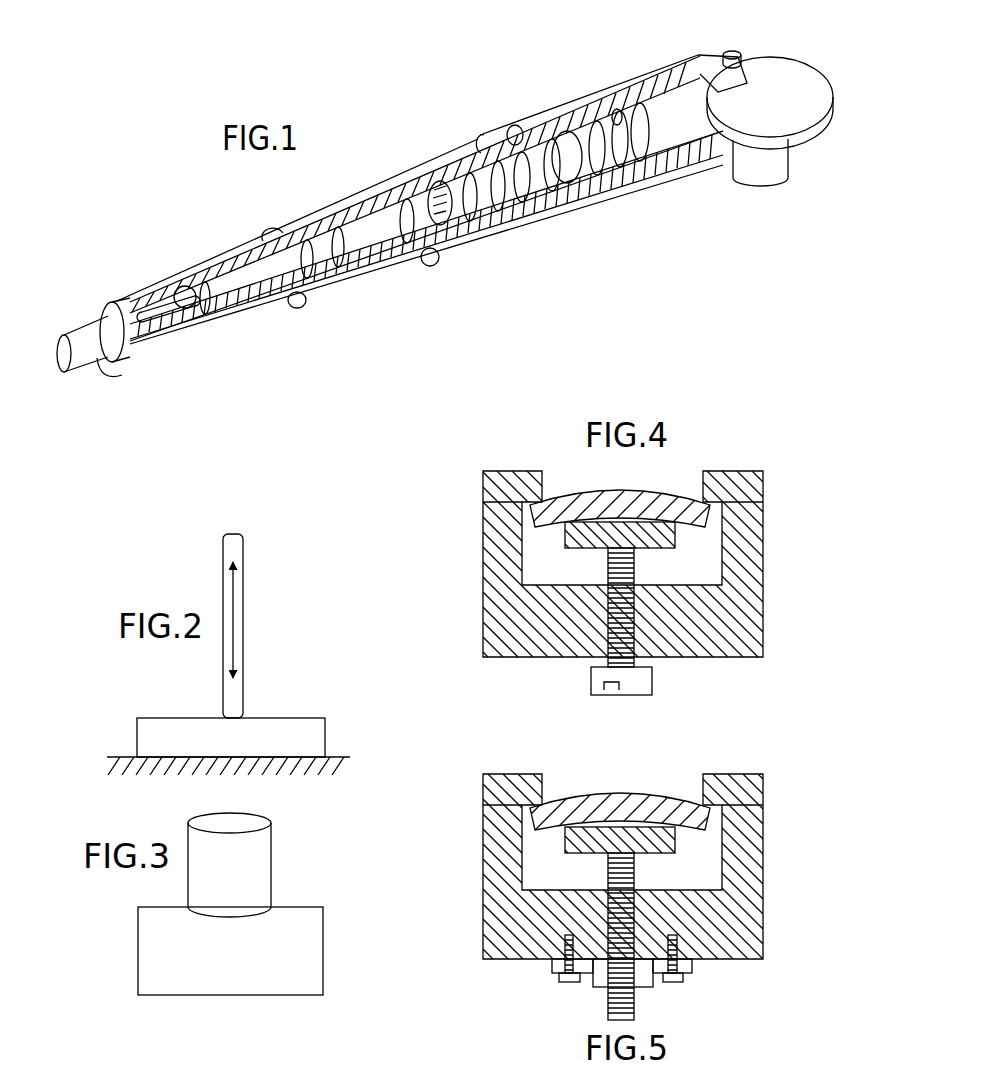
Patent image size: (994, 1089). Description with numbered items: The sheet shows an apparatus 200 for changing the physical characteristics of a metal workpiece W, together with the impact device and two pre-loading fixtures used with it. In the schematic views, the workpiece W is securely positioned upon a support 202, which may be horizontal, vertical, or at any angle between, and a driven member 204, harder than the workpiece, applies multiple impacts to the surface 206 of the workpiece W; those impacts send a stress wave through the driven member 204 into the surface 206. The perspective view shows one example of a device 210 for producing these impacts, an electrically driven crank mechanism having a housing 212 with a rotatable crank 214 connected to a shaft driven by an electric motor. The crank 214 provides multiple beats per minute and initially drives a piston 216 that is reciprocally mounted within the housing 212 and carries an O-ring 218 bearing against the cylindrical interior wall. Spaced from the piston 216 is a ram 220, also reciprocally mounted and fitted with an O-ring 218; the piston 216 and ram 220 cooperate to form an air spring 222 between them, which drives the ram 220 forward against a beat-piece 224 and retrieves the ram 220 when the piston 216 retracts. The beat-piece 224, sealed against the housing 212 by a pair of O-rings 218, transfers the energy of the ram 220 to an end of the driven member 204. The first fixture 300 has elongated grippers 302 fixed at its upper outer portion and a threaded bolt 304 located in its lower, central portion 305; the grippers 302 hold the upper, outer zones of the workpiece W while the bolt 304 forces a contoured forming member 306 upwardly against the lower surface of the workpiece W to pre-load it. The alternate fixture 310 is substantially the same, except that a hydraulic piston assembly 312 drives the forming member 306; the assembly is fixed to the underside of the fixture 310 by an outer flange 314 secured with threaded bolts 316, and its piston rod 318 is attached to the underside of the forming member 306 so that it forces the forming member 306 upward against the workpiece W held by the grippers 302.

In FIG. 2, the apparatus 200 is at (262, 682).
In FIG. 3, the apparatus 200 is at (282, 877).
In FIG. 2, the support 202 is at (104, 756).
In FIG. 1, the driven member 204 is at (66, 372).
In FIG. 2, the driven member 204 is at (244, 583).
In FIG. 3, the driven member 204 is at (272, 845).
In FIG. 2, the surface 206 is at (293, 718).
In FIG. 3, the surface 206 is at (305, 907).
In FIG. 1, the device 210 is at (518, 105).
In FIG. 1, the housing 212 is at (603, 77).
In FIG. 1, the rotatable crank 214 is at (803, 147).
In FIG. 1, the piston 216 is at (643, 173).
In FIG. 1, the O-ring 218 is at (350, 283).
In FIG. 1, the ram 220 is at (483, 243).
In FIG. 1, the air spring 222 is at (512, 128).
In FIG. 1, the beat-piece 224 is at (285, 278).
In FIG. 4, the fixture 300 is at (772, 553).
In FIG. 4, the elongated grippers 302 is at (542, 490).
In FIG. 5, the elongated grippers 302 is at (542, 790).
In FIG. 4, the threaded bolt 304 is at (653, 682).
In FIG. 4, the lower, central portion 305 is at (553, 657).
In FIG. 4, the forming member 306 is at (659, 549).
In FIG. 5, the forming member 306 is at (660, 854).
In FIG. 5, the alternate fixture 310 is at (773, 865).
In FIG. 5, the hydraulic piston assembly 312 is at (650, 988).
In FIG. 5, the outer flange 314 is at (553, 972).
In FIG. 5, the threaded bolts 316 is at (565, 983).
In FIG. 5, the piston rod 318 is at (608, 870).
In FIG. 2, the workpiece W is at (333, 736).
In FIG. 3, the workpiece W is at (333, 949).
In FIG. 4, the workpiece W is at (677, 478).
In FIG. 5, the workpiece W is at (646, 792).